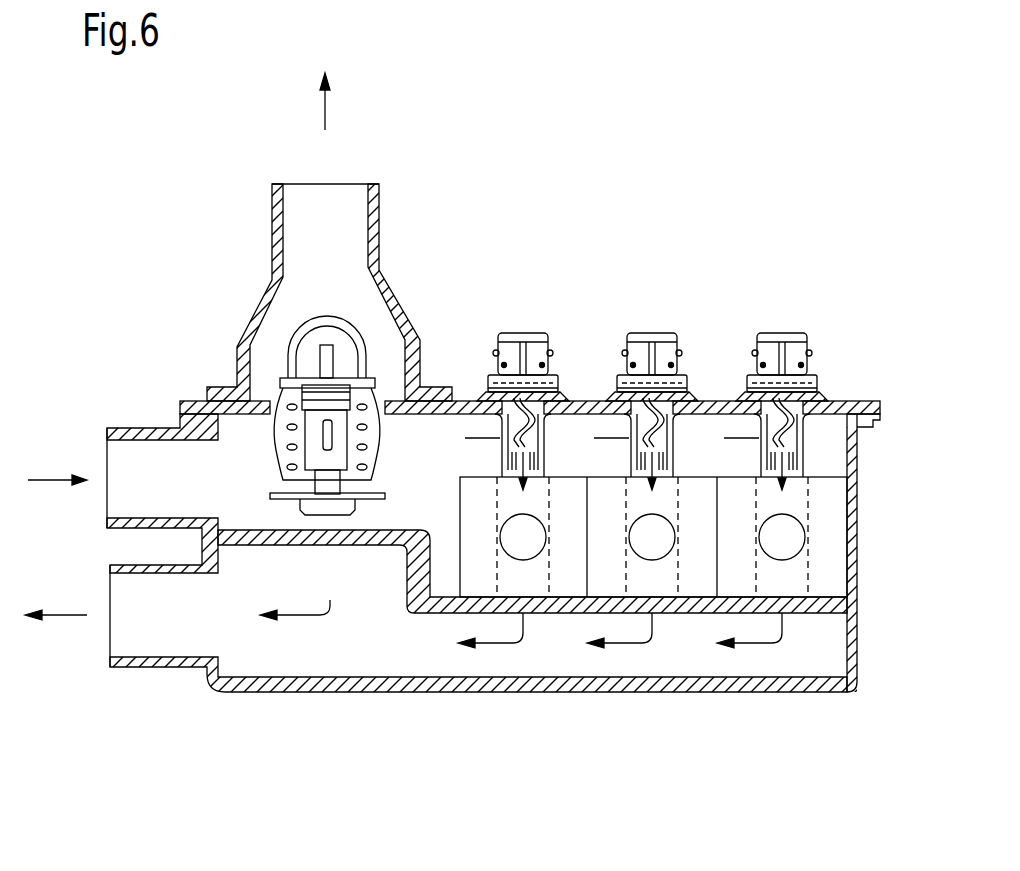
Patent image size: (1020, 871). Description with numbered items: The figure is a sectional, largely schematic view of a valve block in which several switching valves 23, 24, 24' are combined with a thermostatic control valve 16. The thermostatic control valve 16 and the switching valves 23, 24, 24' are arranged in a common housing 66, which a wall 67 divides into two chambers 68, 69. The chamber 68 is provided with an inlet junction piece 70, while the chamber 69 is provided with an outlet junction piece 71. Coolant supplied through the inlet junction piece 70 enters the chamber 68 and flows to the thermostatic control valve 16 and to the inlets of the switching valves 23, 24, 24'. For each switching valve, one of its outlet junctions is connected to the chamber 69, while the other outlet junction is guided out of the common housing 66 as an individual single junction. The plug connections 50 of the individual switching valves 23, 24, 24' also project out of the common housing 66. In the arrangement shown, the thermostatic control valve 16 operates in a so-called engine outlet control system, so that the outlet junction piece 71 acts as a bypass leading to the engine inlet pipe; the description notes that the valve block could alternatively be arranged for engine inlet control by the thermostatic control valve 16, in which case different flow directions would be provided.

The thermostatic control valve 16 is at (394, 352).
The switching valve 23 is at (564, 368).
The switching valve 24 is at (674, 340).
The switching valve 24' is at (816, 340).
The plug connection 50 is at (524, 333).
The common housing 66 is at (866, 522).
The wall 67 is at (412, 557).
The chamber 68 is at (462, 430).
The chamber 69 is at (373, 660).
The inlet junction piece 70 is at (133, 450).
The outlet junction piece 71 is at (160, 643).